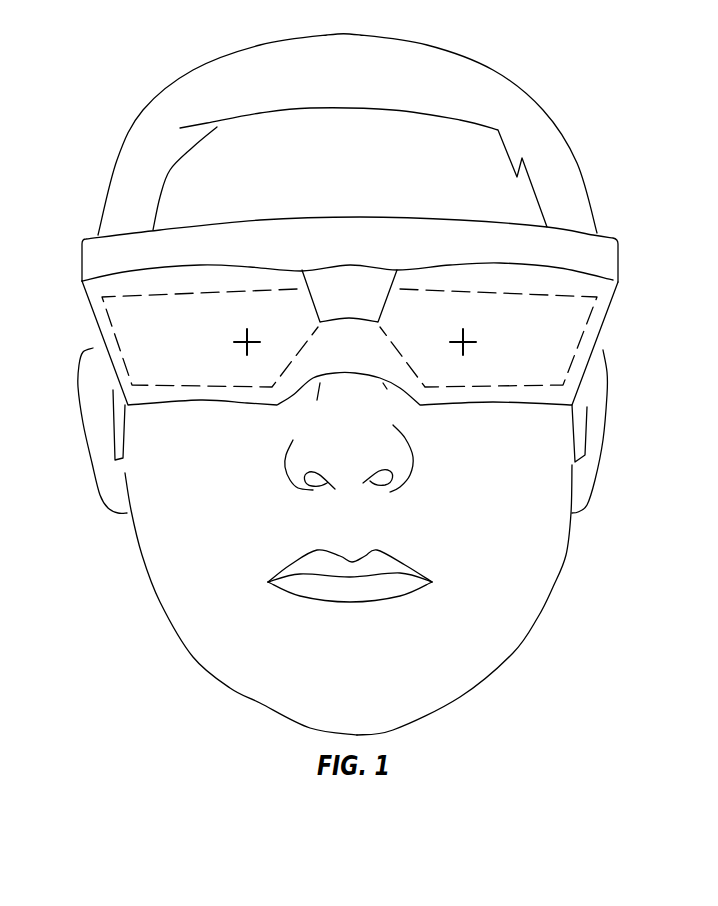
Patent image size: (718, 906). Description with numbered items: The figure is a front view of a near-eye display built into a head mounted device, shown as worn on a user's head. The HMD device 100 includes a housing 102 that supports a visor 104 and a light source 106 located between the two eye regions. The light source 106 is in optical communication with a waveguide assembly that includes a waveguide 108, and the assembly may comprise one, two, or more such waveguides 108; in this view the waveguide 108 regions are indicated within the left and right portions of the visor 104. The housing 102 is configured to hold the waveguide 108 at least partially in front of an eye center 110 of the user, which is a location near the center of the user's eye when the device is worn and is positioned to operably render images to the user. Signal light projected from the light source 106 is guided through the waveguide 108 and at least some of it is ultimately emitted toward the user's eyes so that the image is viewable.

The HMD device 100 is at (614, 207).
The housing 102 is at (618, 258).
The visor 104 is at (615, 320).
The light source 106 is at (378, 282).
The waveguide 108 is at (557, 338).
The eye center 110 is at (477, 340).